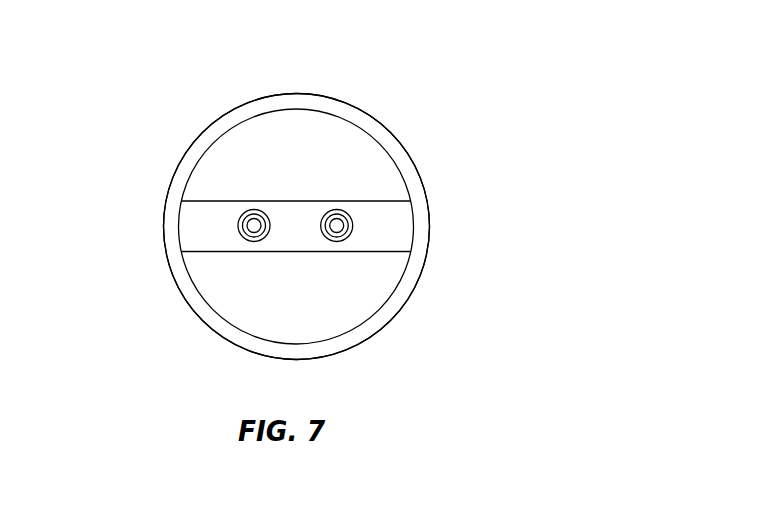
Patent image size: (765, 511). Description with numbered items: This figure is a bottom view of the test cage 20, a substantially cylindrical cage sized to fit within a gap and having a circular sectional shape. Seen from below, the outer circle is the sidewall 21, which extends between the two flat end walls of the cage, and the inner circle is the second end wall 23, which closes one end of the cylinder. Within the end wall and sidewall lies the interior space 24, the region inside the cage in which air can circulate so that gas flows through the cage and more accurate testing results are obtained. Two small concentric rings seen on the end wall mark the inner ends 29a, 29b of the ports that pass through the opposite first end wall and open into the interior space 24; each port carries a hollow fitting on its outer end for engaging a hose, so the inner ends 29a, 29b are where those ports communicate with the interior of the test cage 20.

The test cage 20 is at (175, 112).
The sidewall 21 is at (347, 338).
The second end wall 23 is at (367, 123).
The interior space 24 is at (305, 165).
The inner end 29a is at (239, 232).
The inner end 29b is at (350, 220).